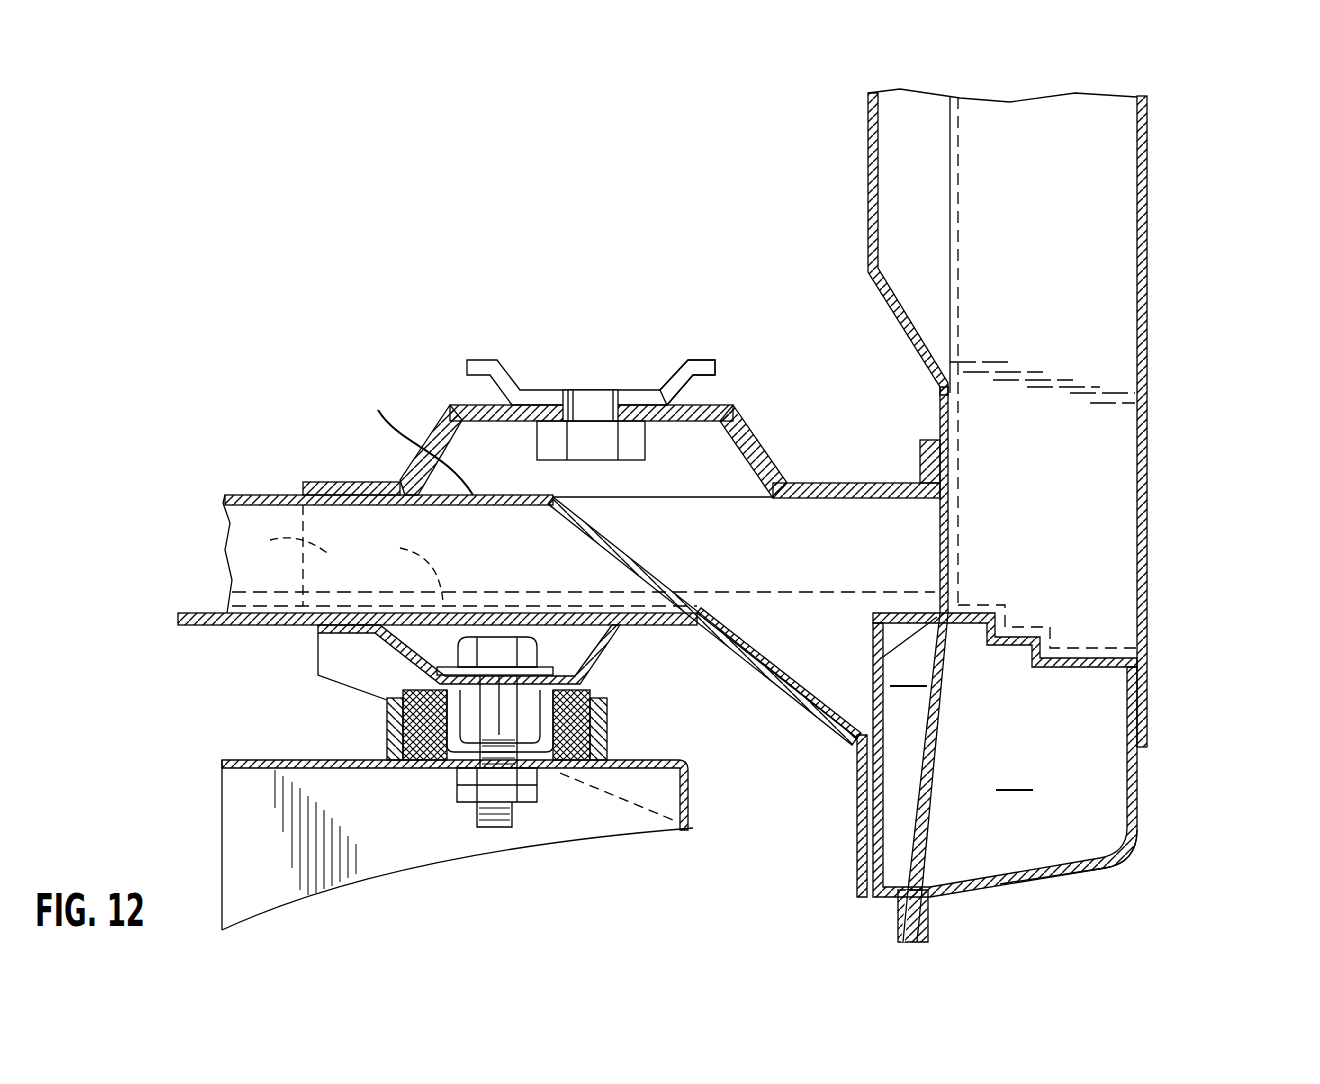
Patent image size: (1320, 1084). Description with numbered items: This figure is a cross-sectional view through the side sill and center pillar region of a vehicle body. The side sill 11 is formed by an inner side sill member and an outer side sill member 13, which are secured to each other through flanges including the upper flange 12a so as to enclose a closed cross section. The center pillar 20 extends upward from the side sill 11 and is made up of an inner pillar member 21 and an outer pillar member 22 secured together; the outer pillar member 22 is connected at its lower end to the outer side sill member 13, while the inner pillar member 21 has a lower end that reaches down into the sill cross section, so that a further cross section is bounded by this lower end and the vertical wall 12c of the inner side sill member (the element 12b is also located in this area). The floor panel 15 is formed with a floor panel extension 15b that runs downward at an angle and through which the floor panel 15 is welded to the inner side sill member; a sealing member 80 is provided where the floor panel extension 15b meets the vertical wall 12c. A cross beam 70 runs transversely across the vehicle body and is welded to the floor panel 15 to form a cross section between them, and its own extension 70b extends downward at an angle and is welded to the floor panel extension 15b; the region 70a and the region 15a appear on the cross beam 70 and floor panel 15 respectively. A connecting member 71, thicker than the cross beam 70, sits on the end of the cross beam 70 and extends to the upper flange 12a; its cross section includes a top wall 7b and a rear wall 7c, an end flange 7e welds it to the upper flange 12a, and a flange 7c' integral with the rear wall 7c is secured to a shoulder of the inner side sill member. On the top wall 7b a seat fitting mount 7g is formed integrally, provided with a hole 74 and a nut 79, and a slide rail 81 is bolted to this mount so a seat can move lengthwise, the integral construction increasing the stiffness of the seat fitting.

The side sill 11 is at (1152, 770).
The upper flange 12a is at (940, 532).
The partition plate 12b is at (905, 605).
The vertical wall 12c is at (883, 710).
The outer side sill member 13 is at (1137, 838).
The floor panel 15 is at (204, 600).
The bracket 15a is at (593, 617).
The floor panel extension 15b is at (753, 662).
The center pillar 20 is at (1180, 219).
The inner pillar member 21 is at (868, 123).
The outer pillar member 22 is at (1147, 128).
The cross beam 70 is at (268, 482).
The flared portion 70a is at (409, 434).
The cross beam extension 70b is at (637, 558).
The connecting member 71 is at (762, 390).
The top wall 7b is at (790, 484).
The rear wall 7c is at (282, 555).
The flange 7c' is at (404, 564).
The end flange 7e is at (928, 462).
The seat fitting mount 7g is at (480, 400).
The hole 74 is at (597, 415).
The nut 79 is at (630, 445).
The sealing member 80 is at (858, 745).
The slide rail 81 is at (685, 372).